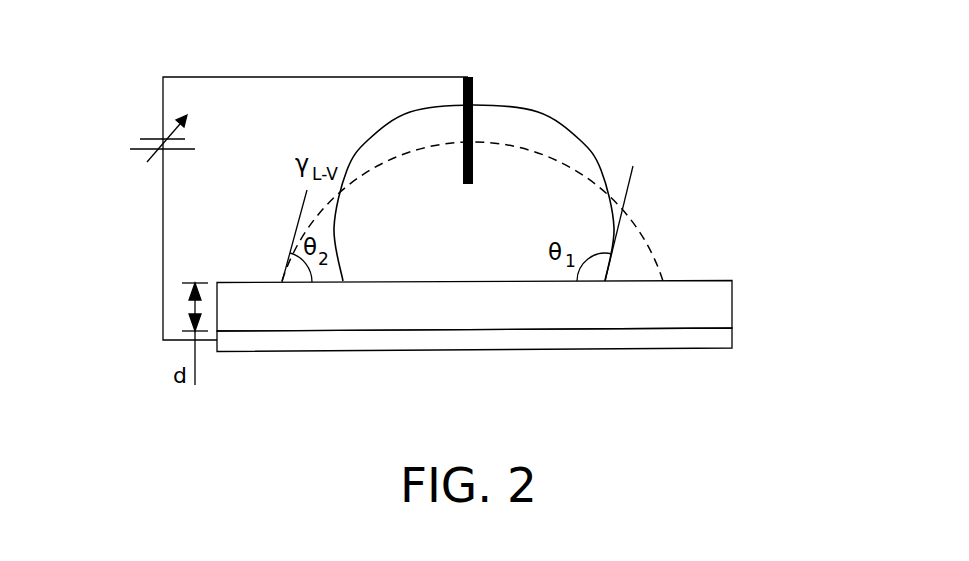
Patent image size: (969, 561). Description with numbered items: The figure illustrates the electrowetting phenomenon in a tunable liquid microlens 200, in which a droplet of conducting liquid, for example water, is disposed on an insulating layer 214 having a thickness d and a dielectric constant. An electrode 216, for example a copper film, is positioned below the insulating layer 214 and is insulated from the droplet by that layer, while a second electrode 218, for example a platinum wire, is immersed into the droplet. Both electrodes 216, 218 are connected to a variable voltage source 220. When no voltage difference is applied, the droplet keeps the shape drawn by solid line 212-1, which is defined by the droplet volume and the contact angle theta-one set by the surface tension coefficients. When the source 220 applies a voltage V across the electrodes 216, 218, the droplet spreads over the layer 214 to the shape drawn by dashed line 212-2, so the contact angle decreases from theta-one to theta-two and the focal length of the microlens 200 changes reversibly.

The tunable liquid microlens 200 is at (120, 179).
The variable voltage source 220 is at (191, 138).
The electrode 218 is at (473, 88).
The solid line 212-1 is at (538, 119).
The dashed line 212-2 is at (647, 240).
The insulating layer 214 is at (712, 309).
The electrode 216 is at (442, 352).